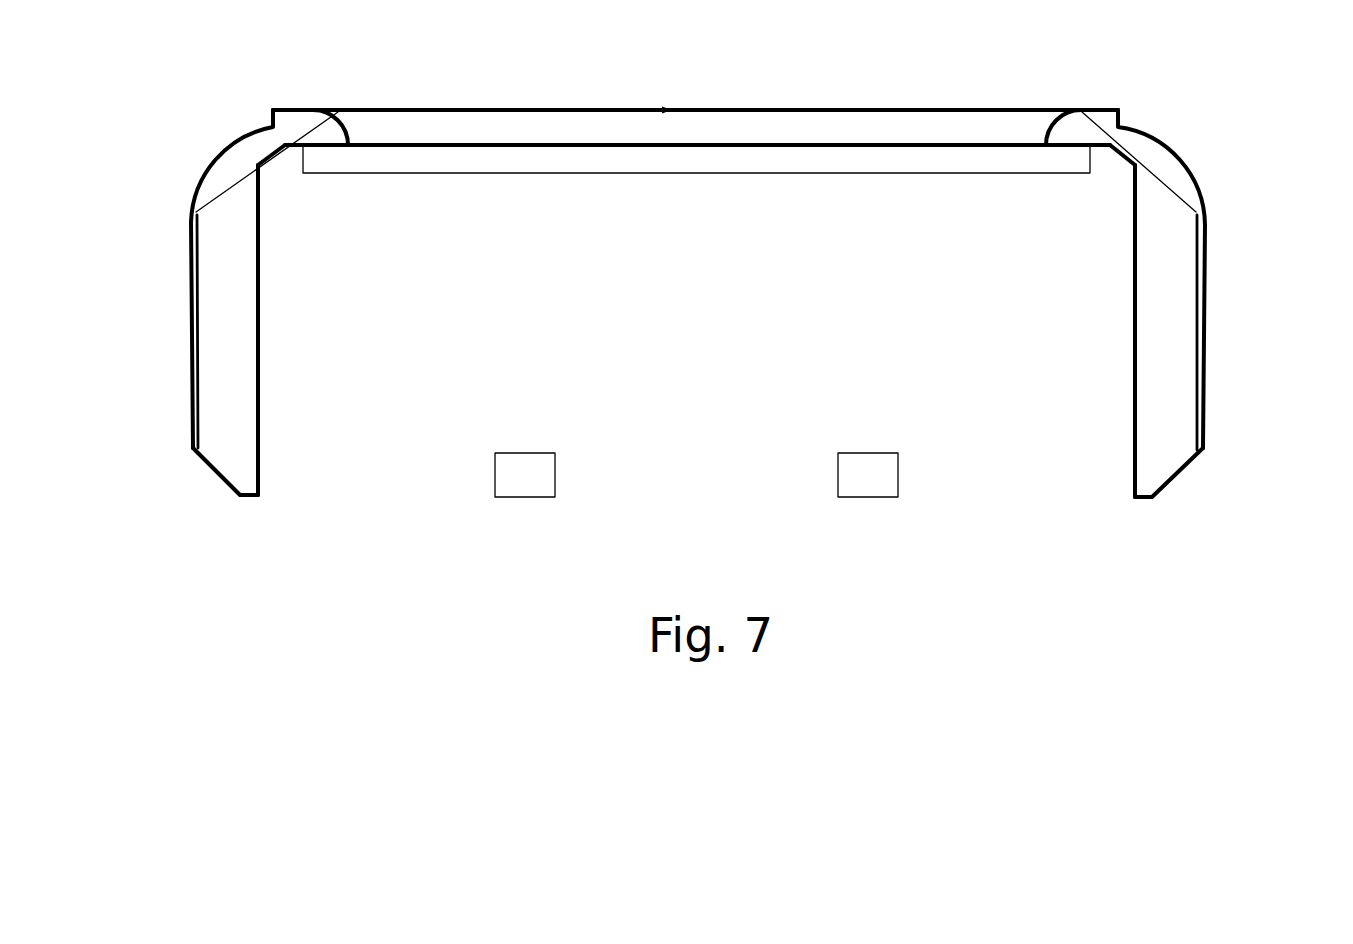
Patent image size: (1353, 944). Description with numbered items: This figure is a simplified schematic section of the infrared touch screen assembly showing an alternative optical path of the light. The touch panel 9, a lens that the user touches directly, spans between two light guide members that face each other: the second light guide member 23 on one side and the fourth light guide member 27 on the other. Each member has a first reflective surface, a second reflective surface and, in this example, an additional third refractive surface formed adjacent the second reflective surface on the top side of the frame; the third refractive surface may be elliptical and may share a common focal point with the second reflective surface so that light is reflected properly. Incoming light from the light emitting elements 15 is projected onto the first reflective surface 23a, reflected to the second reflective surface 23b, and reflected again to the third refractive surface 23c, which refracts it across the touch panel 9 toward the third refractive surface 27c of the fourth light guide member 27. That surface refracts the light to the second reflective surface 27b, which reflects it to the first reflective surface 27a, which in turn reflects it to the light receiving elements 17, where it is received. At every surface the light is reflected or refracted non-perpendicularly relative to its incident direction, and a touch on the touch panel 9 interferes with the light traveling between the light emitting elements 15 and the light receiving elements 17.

The touch panel 9 is at (696, 159).
The light emitting elements 15 is at (200, 450).
The light receiving elements 17 is at (1198, 450).
The second light guide member 23 is at (255, 307).
The first reflective surface of the second light guide member 23a is at (213, 468).
The second reflective surface of the second light guide member 23b is at (214, 168).
The third refractive surface of the second light guide member 23c is at (340, 113).
The fourth light guide member 27 is at (1143, 307).
The first reflective surface of the fourth light guide member 27a is at (1181, 470).
The second reflective surface of the fourth light guide member 27b is at (1181, 167).
The third refractive surface of the fourth light guide member 27c is at (1052, 112).